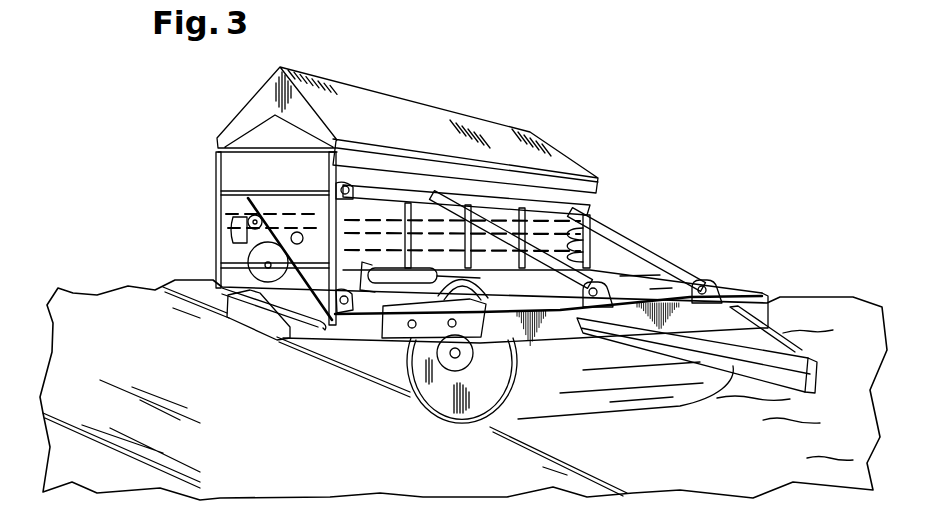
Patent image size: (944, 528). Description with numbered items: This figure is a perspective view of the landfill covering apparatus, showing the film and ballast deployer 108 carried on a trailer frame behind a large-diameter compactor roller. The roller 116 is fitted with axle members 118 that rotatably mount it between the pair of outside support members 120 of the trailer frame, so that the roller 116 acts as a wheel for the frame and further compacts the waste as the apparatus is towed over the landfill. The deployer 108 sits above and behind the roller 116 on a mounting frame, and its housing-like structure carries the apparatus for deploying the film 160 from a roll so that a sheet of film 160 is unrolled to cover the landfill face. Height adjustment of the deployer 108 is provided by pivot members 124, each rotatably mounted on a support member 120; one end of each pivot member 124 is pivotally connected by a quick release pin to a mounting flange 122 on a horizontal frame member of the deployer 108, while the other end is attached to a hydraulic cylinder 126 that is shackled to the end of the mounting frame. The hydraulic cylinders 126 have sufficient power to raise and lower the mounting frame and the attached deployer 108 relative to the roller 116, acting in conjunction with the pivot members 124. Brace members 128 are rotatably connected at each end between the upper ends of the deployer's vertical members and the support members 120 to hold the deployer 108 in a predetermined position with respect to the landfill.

The film and ballast deployer 108 is at (207, 116).
The roller 116 is at (630, 410).
The axle members 118 is at (500, 327).
The support members 120 is at (490, 425).
The mounting flange 122 is at (313, 315).
The pivot member 124 is at (415, 340).
The hydraulic cylinder 126 is at (433, 328).
The brace members 128 is at (650, 248).
The film 160 is at (158, 313).